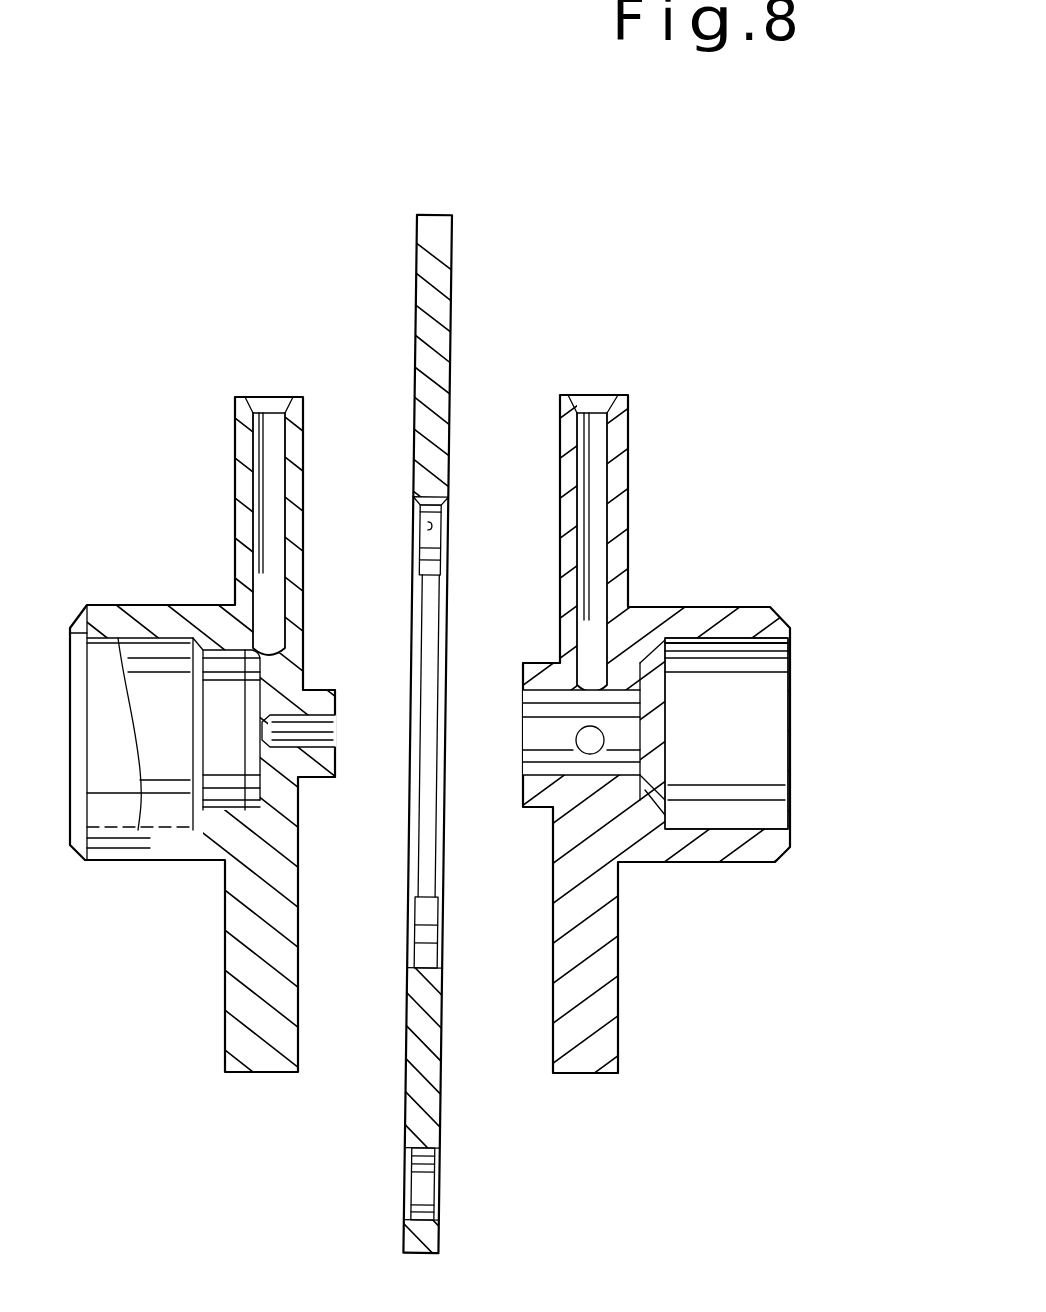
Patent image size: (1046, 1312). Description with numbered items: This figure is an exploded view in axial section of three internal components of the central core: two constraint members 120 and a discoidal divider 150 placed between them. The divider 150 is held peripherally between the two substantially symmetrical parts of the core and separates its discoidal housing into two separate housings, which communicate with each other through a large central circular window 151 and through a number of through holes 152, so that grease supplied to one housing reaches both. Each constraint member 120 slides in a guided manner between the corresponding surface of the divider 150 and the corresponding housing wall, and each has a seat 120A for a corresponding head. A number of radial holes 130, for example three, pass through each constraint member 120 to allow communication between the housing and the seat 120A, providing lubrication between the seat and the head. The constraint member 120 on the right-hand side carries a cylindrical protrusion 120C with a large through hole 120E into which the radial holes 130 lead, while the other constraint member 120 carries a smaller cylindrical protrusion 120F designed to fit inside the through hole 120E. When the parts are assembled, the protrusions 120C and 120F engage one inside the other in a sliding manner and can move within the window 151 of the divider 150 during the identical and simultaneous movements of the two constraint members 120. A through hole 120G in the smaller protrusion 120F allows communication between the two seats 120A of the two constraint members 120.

The constraint member 120 is at (217, 972).
The seat 120A is at (733, 817).
The cylindrical protrusion 120C is at (530, 672).
The through hole 120E is at (625, 732).
The smaller cylindrical protrusion 120F is at (312, 690).
The through hole 120G is at (307, 740).
The radial hole 130 is at (272, 462).
The discoidal divider 150 is at (434, 754).
The central circular window 151 is at (443, 533).
The through hole 152 is at (428, 1187).